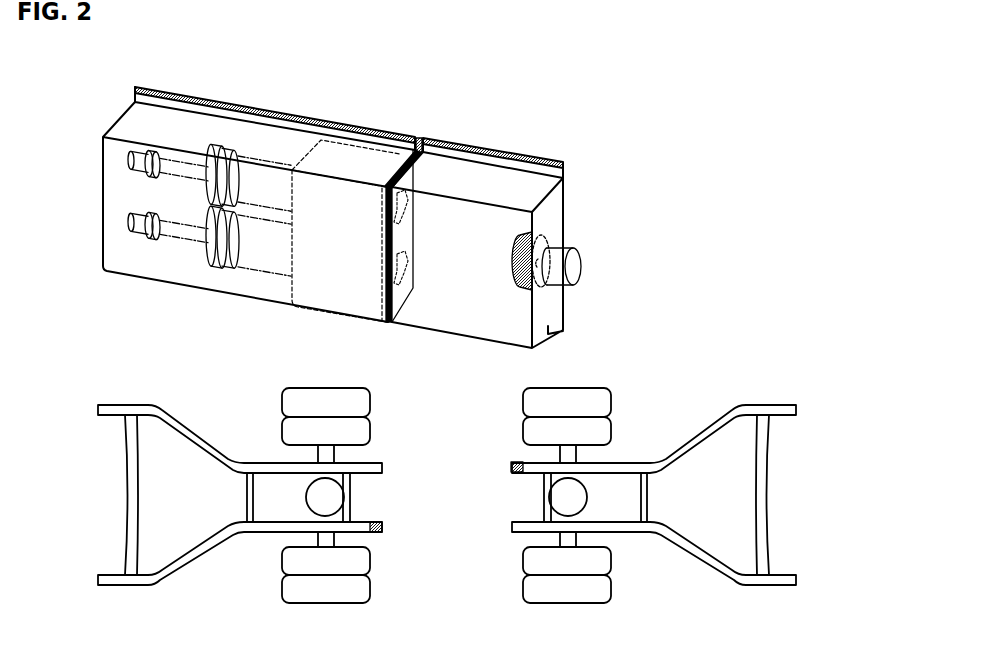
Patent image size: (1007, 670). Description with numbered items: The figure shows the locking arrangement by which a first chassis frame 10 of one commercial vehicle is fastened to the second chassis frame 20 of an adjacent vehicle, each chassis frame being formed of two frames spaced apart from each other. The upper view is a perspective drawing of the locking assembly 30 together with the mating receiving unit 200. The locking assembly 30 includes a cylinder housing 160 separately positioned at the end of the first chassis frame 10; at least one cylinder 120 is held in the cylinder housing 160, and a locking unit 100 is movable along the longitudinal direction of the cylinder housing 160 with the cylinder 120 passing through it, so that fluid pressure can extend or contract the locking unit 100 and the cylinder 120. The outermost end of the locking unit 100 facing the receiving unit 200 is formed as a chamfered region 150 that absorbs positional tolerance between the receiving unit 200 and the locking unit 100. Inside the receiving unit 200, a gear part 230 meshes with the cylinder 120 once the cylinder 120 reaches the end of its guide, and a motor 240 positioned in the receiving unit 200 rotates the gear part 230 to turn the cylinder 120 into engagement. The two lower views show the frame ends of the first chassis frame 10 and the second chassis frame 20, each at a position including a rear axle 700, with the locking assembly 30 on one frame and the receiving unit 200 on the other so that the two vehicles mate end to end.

The first chassis frame 10 is at (177, 568).
The second chassis frame 20 is at (708, 562).
The locking assembly 30 is at (322, 114).
The locking unit 100 is at (298, 287).
The cylinder 120 is at (198, 235).
The chamfered region 150 is at (399, 168).
The cylinder housing 160 is at (195, 120).
The receiving unit 200 is at (470, 168).
The gear part 230 is at (546, 238).
The motor 240 is at (580, 264).
The rear axle 700 is at (325, 593).